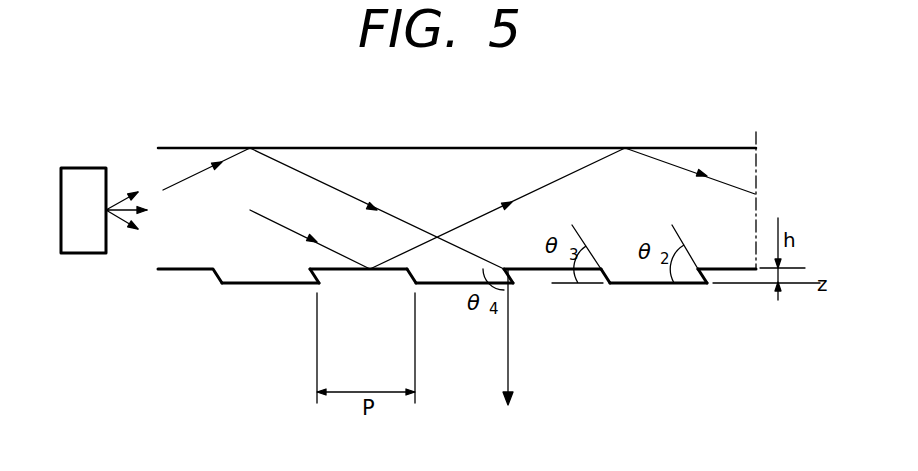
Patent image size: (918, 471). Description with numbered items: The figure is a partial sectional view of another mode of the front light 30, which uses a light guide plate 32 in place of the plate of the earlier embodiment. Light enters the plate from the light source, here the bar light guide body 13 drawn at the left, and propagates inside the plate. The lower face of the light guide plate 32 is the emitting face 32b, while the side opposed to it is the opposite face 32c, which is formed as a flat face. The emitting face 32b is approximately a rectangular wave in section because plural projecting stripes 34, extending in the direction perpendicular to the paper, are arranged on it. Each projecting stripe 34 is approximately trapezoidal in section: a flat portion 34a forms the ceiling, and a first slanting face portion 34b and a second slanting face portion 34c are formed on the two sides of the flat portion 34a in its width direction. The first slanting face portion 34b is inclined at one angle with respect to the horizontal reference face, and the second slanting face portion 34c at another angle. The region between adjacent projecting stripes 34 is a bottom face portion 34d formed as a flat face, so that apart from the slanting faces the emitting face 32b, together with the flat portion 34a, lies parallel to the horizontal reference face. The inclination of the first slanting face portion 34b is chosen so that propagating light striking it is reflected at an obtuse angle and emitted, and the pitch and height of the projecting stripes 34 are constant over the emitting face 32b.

The bar light guide body 13 is at (78, 254).
The front light 30 is at (653, 130).
The light guide plate 32 is at (747, 160).
The emitting face 32b is at (230, 286).
The opposite face 32c is at (388, 147).
The projecting stripe 34 is at (272, 275).
The flat portion 34a is at (657, 283).
The first slanting face portion 34b is at (512, 275).
The second slanting face portion 34c is at (405, 275).
The bottom face portion 34d is at (330, 273).